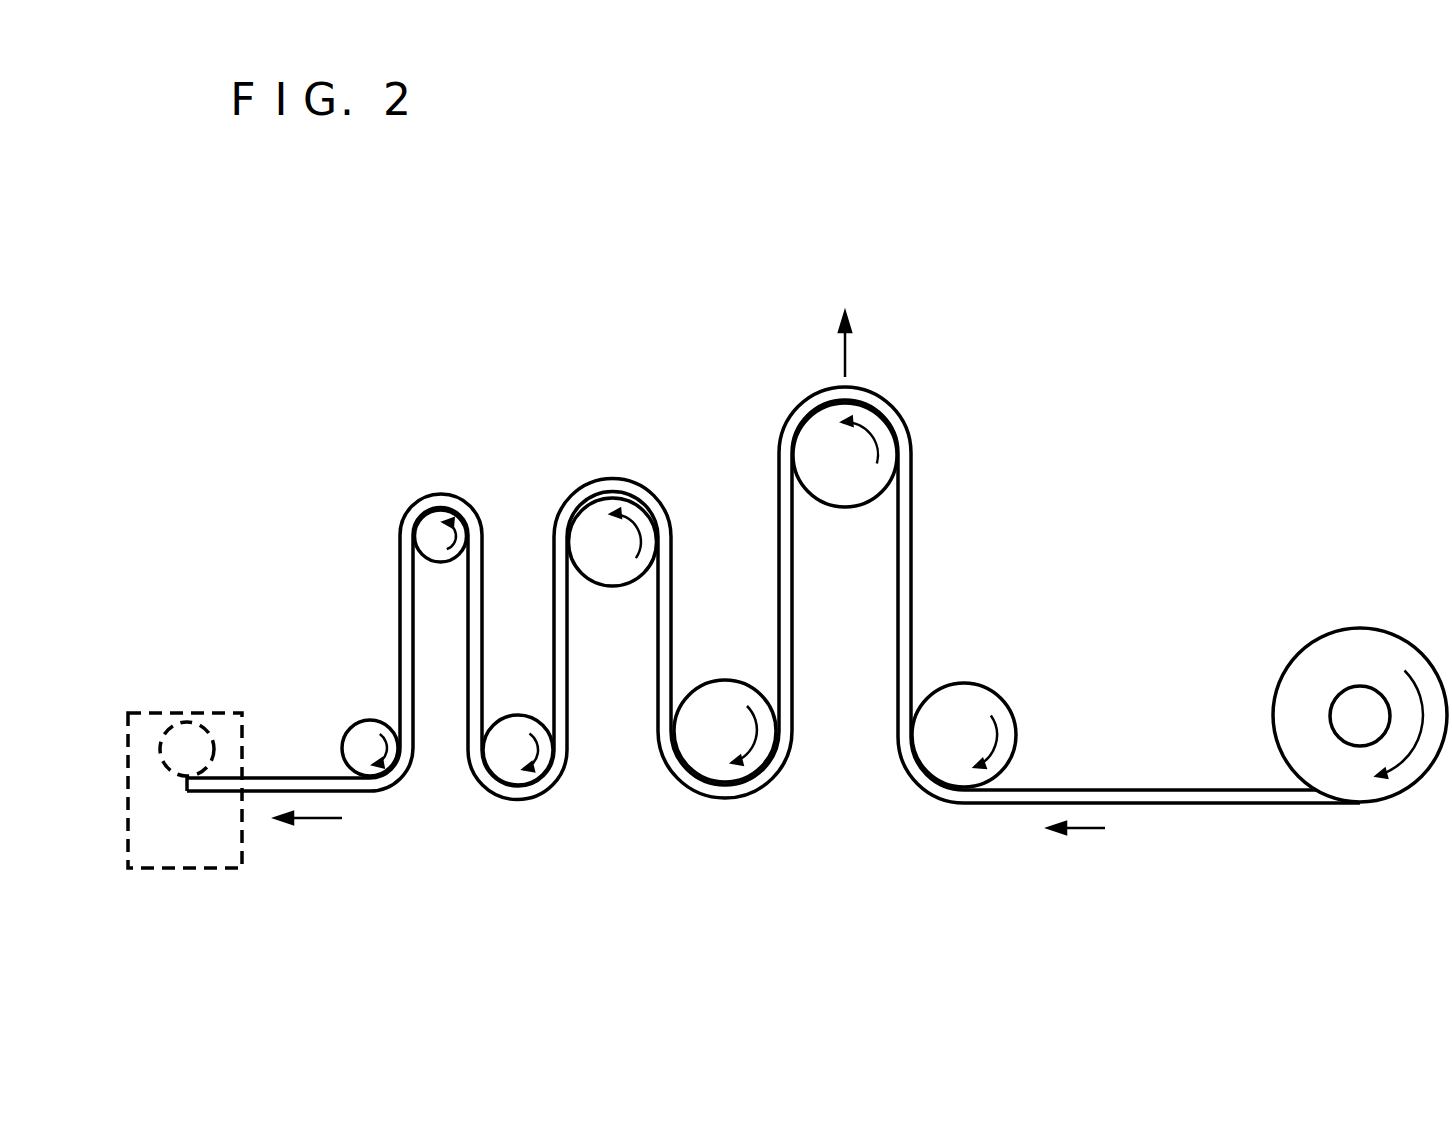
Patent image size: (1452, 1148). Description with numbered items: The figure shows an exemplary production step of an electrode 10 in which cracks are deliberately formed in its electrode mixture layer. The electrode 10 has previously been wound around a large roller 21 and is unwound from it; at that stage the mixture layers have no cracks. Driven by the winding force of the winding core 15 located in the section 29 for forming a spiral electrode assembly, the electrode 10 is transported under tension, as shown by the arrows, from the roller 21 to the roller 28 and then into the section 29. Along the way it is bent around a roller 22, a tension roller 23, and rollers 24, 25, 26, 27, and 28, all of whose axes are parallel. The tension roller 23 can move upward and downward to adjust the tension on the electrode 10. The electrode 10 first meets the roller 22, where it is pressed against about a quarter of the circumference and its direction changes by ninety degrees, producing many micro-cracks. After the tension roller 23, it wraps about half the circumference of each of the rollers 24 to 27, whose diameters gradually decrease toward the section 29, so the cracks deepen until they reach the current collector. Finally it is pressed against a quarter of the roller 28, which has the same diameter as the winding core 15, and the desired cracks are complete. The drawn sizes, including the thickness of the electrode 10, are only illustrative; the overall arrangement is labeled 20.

The electrode 10 is at (1165, 788).
The winding core 15 is at (197, 722).
The web processing apparatus 20 is at (1192, 585).
The roller 21 is at (1350, 645).
The roller 22 is at (958, 700).
The tension roller 23 is at (845, 495).
The roller 24 is at (717, 692).
The roller 25 is at (608, 572).
The roller 26 is at (512, 733).
The roller 27 is at (435, 537).
The roller 28 is at (365, 742).
The section for forming a spiral electrode assembly 29 is at (203, 857).